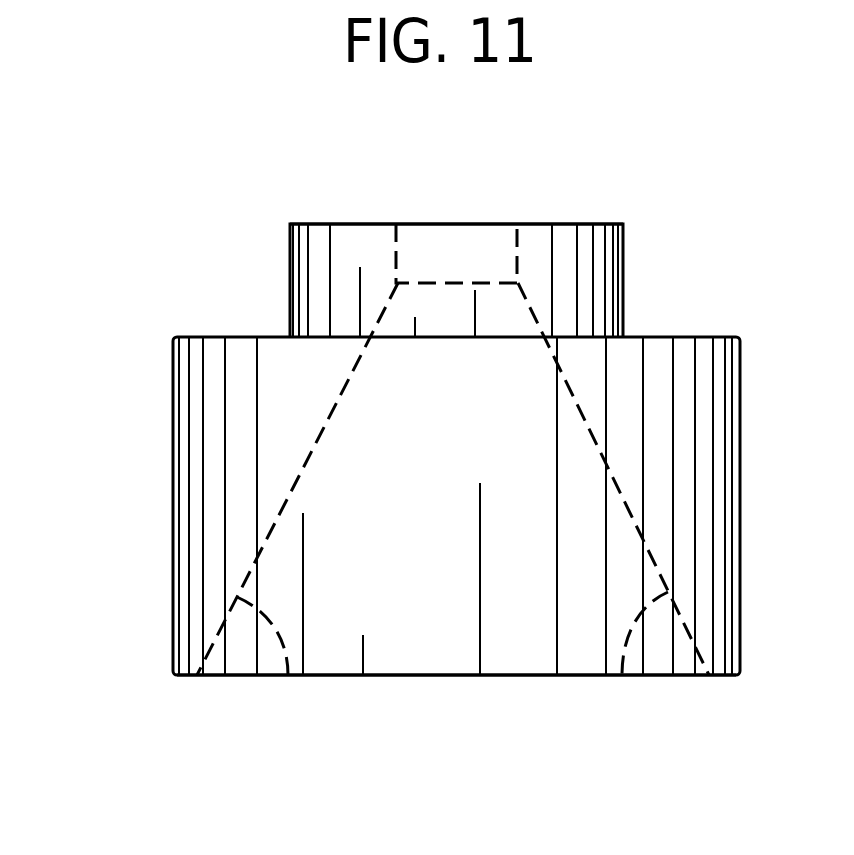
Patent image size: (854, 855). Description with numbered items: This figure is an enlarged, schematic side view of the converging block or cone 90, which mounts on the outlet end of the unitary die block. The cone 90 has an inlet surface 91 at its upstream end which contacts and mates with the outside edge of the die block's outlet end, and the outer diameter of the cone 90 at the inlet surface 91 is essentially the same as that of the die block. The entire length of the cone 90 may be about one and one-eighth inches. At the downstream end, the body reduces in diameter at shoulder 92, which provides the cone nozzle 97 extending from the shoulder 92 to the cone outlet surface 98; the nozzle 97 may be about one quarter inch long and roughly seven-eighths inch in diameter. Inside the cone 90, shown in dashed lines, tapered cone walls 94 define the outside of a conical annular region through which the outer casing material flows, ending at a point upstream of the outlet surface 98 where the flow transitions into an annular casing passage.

The converging block or cone 90 is at (148, 500).
The inlet surface 91 is at (188, 676).
The shoulder 92 is at (216, 337).
The tapered cone walls 94 is at (625, 722).
The cone nozzle 97 is at (623, 256).
The cone outlet surface 98 is at (327, 224).